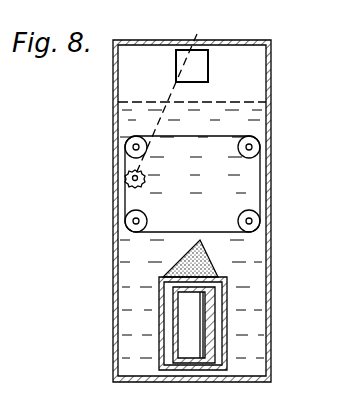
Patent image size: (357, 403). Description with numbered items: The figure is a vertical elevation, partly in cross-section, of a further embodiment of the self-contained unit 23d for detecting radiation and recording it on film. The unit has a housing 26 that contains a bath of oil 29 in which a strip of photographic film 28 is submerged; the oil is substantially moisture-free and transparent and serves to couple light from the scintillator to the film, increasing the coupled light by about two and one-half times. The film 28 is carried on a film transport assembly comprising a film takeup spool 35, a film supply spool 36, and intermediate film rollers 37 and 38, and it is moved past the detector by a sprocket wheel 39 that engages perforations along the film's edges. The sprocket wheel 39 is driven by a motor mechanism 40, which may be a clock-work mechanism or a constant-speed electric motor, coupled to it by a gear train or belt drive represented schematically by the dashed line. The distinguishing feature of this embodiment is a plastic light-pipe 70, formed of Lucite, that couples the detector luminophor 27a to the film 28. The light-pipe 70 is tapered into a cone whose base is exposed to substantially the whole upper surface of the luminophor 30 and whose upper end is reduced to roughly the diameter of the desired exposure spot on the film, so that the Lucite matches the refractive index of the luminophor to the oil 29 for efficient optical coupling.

The self-contained unit 23d is at (279, 114).
The motor mechanism 40 is at (171, 95).
The film takeup spool 35 is at (125, 146).
The film supply spool 36 is at (262, 148).
The intermediate film roller 37 is at (125, 221).
The intermediate film roller 38 is at (258, 228).
The sprocket wheel 39 is at (128, 180).
The photographic film 28 is at (259, 180).
The bath of oil 29 is at (228, 192).
The light-pipe 70 is at (201, 240).
The detector luminophor 27a is at (228, 296).
The housing 26 is at (268, 316).
The luminophor 30 is at (200, 350).